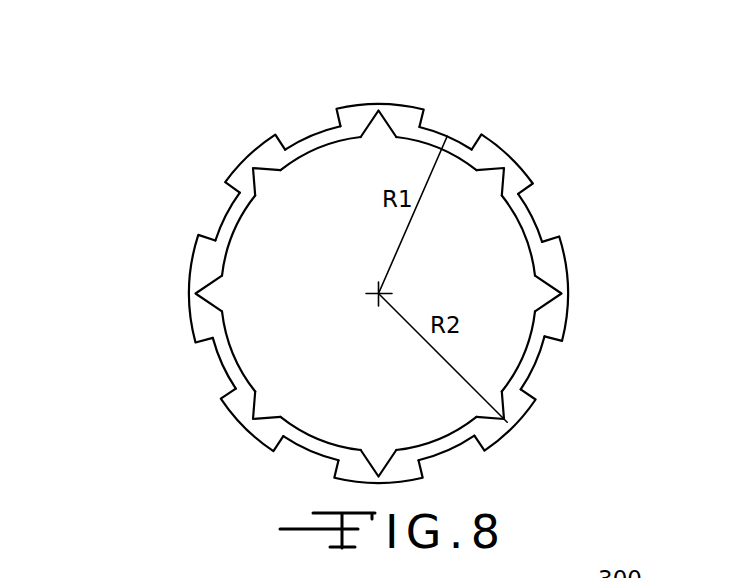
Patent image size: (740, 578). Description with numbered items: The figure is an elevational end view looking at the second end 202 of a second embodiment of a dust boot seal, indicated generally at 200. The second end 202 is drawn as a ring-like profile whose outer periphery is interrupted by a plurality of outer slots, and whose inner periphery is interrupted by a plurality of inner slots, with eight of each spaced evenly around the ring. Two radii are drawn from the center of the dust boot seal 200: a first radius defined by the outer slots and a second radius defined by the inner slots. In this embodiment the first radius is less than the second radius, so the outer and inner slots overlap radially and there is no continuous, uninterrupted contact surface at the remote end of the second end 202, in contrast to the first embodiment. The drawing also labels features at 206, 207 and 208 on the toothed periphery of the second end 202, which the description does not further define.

The dust boot seal 200 is at (150, 134).
The second end 202 is at (507, 145).
The outer tooth block 206 is at (402, 112).
The outer recess surface 207 is at (528, 212).
The inner tooth 208 is at (500, 181).